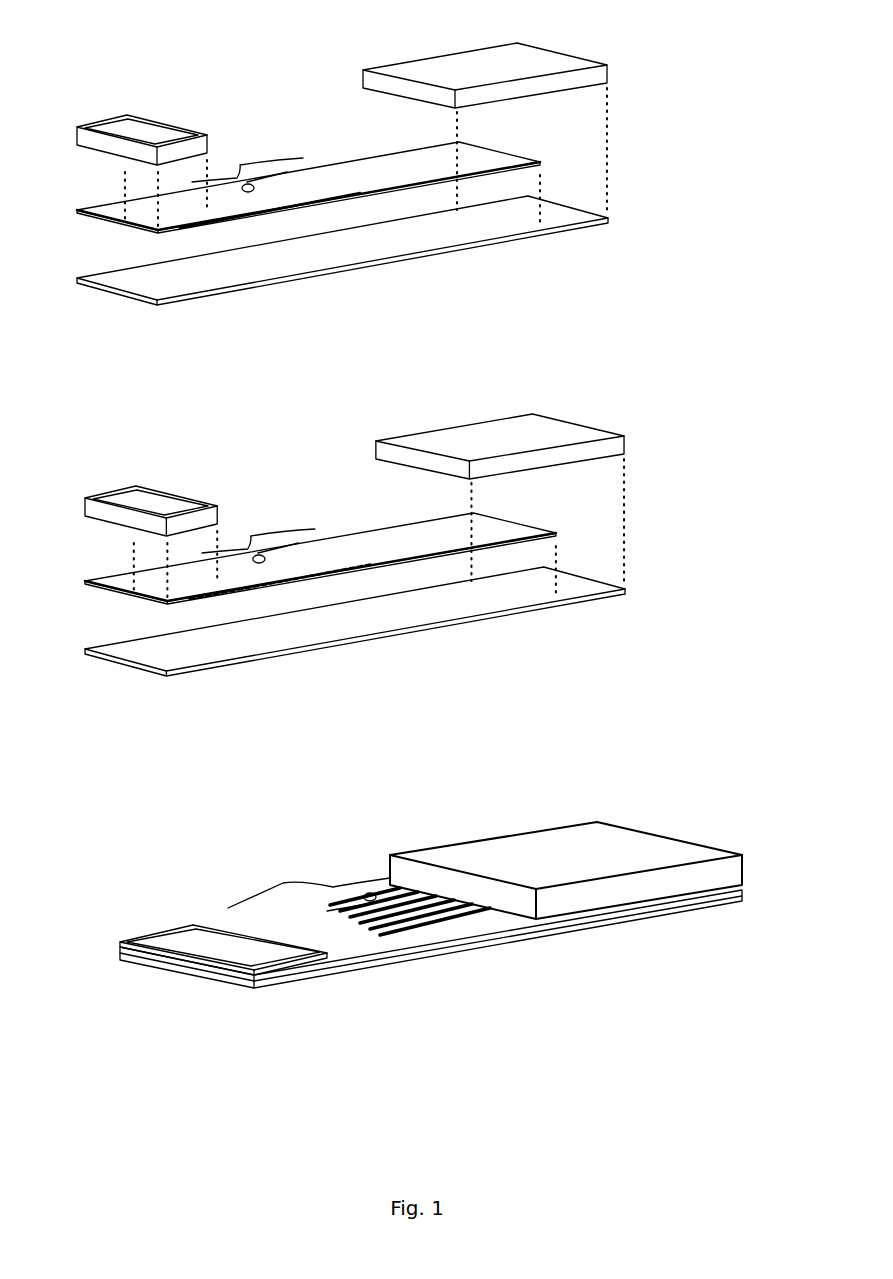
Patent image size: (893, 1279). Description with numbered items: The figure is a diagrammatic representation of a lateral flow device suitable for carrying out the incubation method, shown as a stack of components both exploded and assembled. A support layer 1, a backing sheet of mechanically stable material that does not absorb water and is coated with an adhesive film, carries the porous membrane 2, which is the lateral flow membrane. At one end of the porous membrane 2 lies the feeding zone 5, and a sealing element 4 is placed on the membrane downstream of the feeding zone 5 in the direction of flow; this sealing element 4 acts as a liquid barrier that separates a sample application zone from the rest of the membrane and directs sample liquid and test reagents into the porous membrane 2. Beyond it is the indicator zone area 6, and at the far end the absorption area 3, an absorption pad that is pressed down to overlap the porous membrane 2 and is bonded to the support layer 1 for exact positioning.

The support layer 1 is at (410, 258).
The porous membrane 2 is at (292, 207).
The absorption area 3 is at (440, 60).
The sealing element 4 is at (123, 113).
The feeding zone 5 is at (105, 210).
The indicator zone area 6 is at (235, 162).